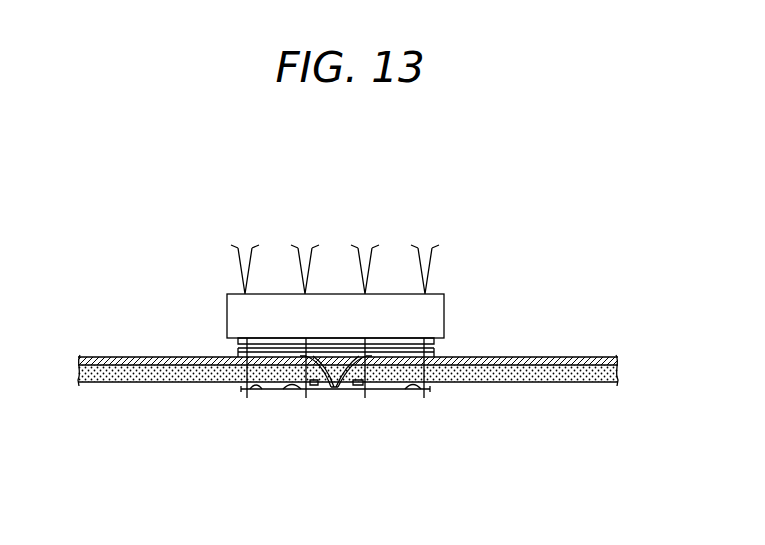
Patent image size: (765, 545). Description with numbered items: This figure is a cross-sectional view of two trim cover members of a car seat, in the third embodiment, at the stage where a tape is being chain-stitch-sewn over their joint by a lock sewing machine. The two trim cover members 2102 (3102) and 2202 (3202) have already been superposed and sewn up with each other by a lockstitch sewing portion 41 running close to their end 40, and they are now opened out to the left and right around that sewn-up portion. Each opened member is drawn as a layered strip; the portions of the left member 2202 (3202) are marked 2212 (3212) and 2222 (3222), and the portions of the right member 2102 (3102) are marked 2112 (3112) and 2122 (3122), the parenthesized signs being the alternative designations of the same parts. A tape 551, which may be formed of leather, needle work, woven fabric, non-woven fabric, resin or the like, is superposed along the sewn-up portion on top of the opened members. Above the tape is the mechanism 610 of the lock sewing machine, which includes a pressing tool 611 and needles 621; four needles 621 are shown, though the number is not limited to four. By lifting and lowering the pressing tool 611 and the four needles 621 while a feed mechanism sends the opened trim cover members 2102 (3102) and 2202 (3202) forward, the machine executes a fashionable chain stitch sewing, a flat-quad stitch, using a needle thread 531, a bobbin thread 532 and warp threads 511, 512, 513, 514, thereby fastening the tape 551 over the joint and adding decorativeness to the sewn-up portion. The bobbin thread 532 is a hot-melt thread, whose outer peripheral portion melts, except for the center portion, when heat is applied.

The mechanism 610 is at (403, 276).
The pressing tool 611 is at (444, 316).
The needle 621 is at (253, 268).
The needle thread 531 is at (253, 338).
The tape 551 is at (238, 352).
The warp thread 511 is at (258, 392).
The warp thread 512 is at (283, 392).
The warp thread 513 is at (382, 392).
The warp thread 514 is at (423, 395).
The end 40 is at (323, 392).
The lockstitch sewing portion 41 is at (357, 392).
The bobbin thread 532 is at (393, 392).
The trim cover member 2202 is at (197, 438).
The trim cover member 3202 is at (197, 438).
The left upper layer 2212 is at (203, 408).
The left upper layer (alt.) 3212 is at (100, 367).
The left lower layer 2222 is at (208, 407).
The left lower layer (alt.) 3222 is at (170, 383).
The trim cover member 2102 is at (485, 438).
The trim cover member 3102 is at (485, 438).
The right upper layer 2112 is at (482, 408).
The right upper layer (alt.) 3112 is at (595, 367).
The right lower layer 2122 is at (478, 407).
The right lower layer (alt.) 3122 is at (512, 383).